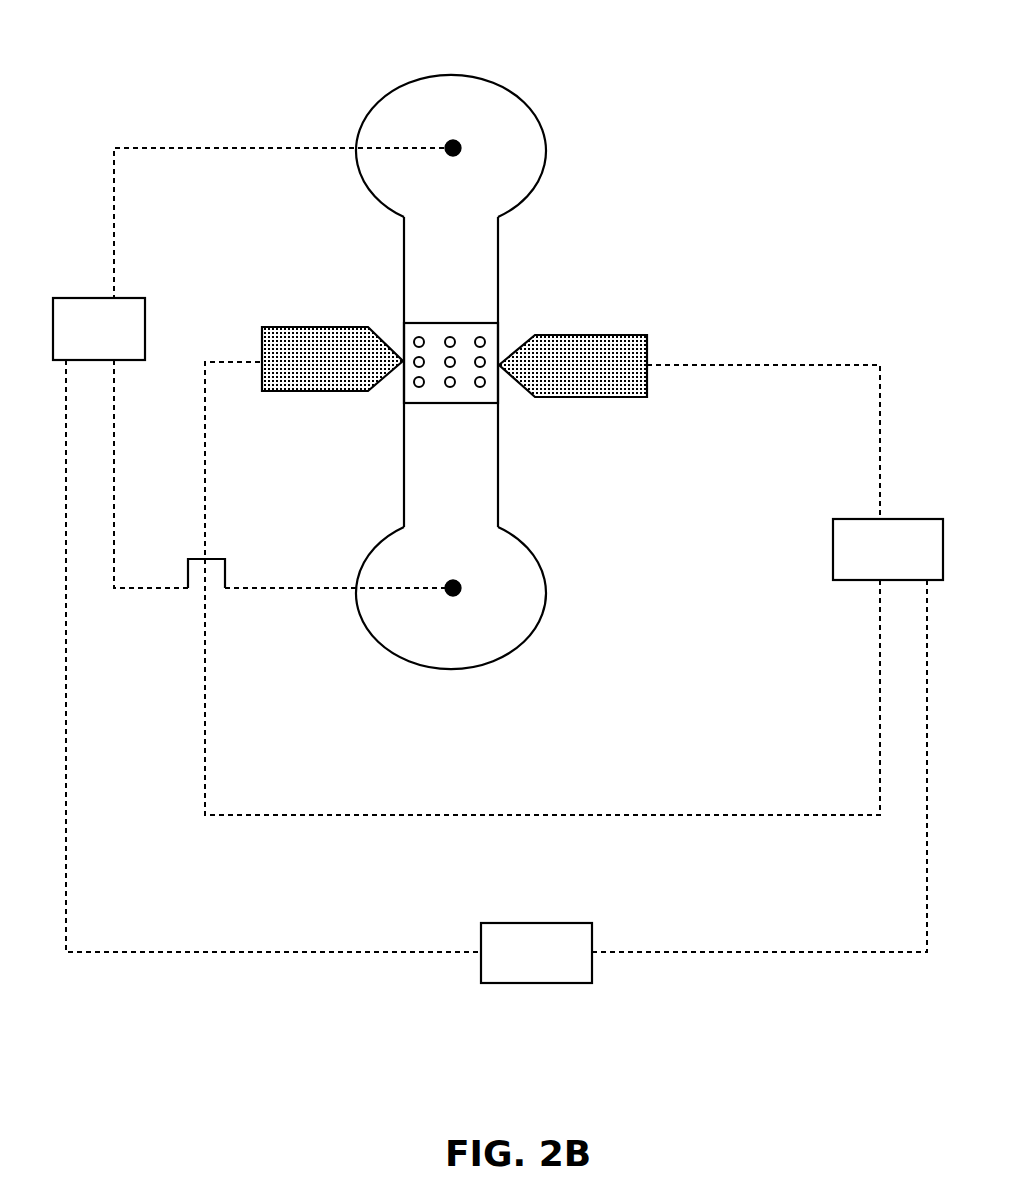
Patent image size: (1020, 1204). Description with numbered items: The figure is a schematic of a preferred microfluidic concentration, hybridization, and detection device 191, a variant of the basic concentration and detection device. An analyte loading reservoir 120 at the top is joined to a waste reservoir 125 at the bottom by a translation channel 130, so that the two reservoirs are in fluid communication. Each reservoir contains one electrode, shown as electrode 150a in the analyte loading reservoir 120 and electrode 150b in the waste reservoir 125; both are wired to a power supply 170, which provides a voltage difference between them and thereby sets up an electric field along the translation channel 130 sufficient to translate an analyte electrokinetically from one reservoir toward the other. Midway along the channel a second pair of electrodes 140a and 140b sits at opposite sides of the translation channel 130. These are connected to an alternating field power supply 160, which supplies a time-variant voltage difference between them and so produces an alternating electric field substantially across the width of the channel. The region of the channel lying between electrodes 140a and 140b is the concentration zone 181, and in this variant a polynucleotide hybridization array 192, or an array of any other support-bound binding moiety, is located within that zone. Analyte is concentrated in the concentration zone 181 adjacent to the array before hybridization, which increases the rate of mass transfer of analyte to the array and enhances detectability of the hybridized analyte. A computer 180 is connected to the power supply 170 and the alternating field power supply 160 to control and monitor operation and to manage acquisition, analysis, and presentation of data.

The microfluidic concentration, hybridization, and detection device 191 is at (836, 96).
The analyte loading reservoir 120 is at (547, 173).
The waste reservoir 125 is at (547, 616).
The translation channel 130 is at (502, 493).
The concentration zone 181 is at (452, 352).
The polynucleotide hybridization array 192 is at (440, 345).
The electrode 150a is at (457, 132).
The electrode 150b is at (438, 598).
The electrode 140a is at (347, 326).
The electrode 140b is at (645, 335).
The power supply 170 is at (126, 345).
The alternating field power supply 160 is at (915, 565).
The computer 180 is at (564, 969).